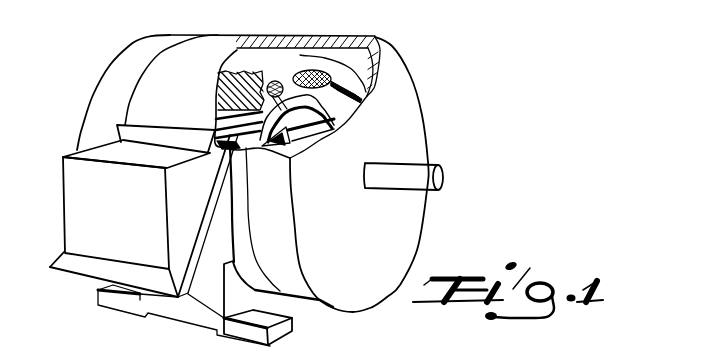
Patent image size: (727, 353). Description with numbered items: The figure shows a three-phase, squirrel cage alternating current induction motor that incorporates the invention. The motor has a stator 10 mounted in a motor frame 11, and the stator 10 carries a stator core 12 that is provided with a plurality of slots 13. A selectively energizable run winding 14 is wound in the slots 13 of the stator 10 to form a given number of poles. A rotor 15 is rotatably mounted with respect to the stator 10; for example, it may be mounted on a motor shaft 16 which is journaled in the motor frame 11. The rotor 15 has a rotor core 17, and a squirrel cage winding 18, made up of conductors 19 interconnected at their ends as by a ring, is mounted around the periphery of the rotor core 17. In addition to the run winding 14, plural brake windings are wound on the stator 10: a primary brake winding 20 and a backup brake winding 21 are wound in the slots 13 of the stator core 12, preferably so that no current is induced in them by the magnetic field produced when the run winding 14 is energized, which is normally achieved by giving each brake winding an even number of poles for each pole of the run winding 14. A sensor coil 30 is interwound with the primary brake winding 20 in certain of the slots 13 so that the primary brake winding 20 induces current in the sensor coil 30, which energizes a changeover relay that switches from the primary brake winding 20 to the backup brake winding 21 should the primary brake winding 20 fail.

The stator 10 is at (300, 63).
The motor frame 11 is at (147, 92).
The stator core 12 is at (278, 68).
The slots 13 is at (243, 50).
The run winding 14 is at (196, 319).
The rotor 15 is at (294, 122).
The motor shaft 16 is at (449, 180).
The rotor core 17 is at (247, 148).
The squirrel cage winding 18 is at (240, 135).
The conductors 19 is at (217, 121).
The primary brake winding 20 is at (350, 93).
The backup brake winding 21 is at (315, 79).
The sensor coil 30 is at (297, 118).